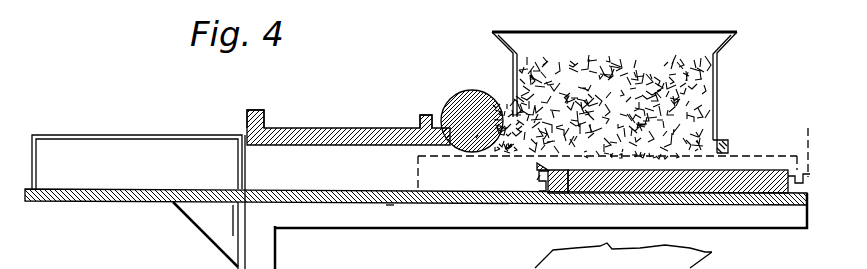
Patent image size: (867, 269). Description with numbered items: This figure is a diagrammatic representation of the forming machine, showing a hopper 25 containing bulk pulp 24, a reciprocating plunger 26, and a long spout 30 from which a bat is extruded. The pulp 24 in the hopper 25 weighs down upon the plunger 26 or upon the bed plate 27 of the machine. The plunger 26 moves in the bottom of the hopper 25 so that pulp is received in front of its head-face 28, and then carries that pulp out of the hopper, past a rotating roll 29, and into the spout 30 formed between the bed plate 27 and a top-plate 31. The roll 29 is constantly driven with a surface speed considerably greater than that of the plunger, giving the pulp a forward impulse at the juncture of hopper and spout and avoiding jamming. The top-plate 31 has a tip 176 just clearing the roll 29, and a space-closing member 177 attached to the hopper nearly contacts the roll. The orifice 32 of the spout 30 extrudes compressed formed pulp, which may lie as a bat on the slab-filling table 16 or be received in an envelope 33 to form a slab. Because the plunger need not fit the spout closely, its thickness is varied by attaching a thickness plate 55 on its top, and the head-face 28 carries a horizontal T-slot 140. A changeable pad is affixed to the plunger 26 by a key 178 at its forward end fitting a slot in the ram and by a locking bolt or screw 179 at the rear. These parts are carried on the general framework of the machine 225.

The slab-filling table 16 is at (112, 201).
The pulp 24 is at (620, 119).
The hopper 25 is at (720, 85).
The plunger 26 is at (747, 183).
The bed plate 27 is at (390, 205).
The head-face 28 is at (540, 175).
The rotating roll 29 is at (472, 91).
The spout 30 is at (352, 158).
The top-plate 31 is at (310, 113).
The orifice 32 is at (240, 160).
The envelope 33 is at (137, 135).
The thickness plate 55 is at (746, 170).
The T-slot 140 is at (535, 230).
The tip 176 is at (430, 101).
The space-closing member 177 is at (476, 138).
The key 178 is at (600, 214).
The locking bolt or screw 179 is at (768, 112).
The general framework of the machine 225 is at (265, 258).